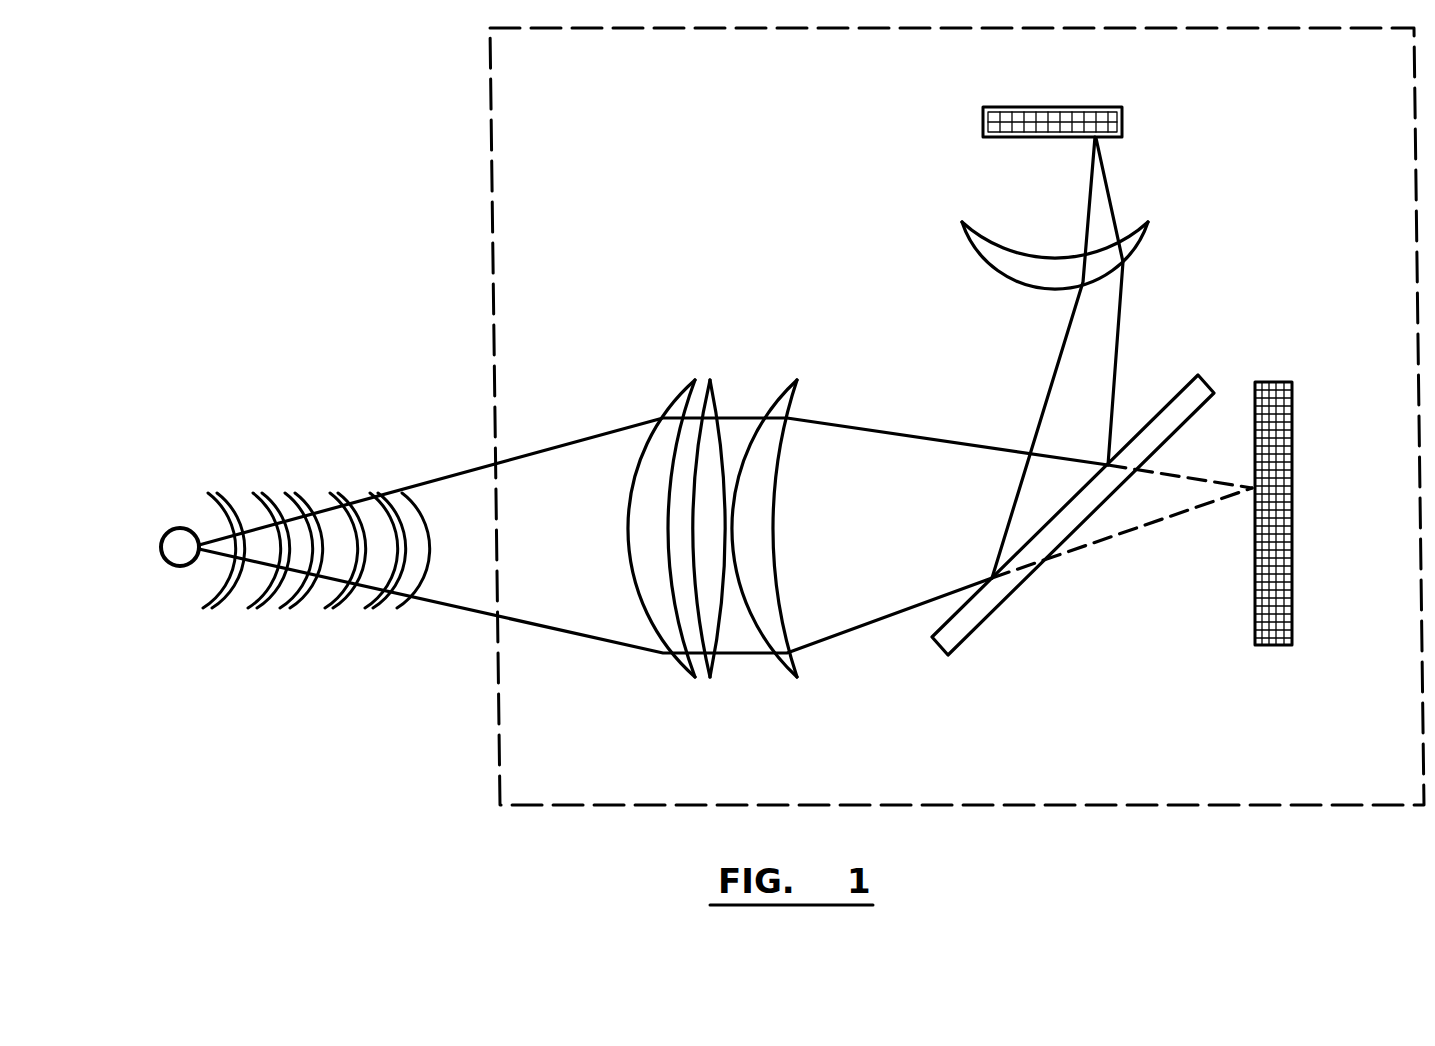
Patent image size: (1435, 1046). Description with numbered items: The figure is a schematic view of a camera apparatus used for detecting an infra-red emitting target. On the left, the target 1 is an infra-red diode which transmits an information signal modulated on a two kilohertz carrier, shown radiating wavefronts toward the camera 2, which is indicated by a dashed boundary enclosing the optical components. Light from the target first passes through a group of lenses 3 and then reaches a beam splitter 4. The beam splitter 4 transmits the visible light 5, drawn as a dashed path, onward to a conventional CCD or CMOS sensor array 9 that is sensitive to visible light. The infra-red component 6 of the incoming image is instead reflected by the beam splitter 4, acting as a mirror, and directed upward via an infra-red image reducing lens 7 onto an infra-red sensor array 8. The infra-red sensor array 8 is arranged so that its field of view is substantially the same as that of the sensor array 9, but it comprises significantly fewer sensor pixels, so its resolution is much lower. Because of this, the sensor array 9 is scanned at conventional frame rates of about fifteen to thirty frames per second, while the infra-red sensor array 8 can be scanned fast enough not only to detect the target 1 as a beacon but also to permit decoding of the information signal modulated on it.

The target 1 is at (178, 541).
The camera 2 is at (492, 250).
The group of lenses 3 is at (666, 383).
The beam splitter 4 is at (972, 617).
The visible light 5 is at (1135, 518).
The infra-red component 6 is at (1113, 353).
The infra-red image reducing lens 7 is at (1145, 232).
The infra-red sensor array 8 is at (1120, 122).
The sensor array 9 is at (1280, 558).